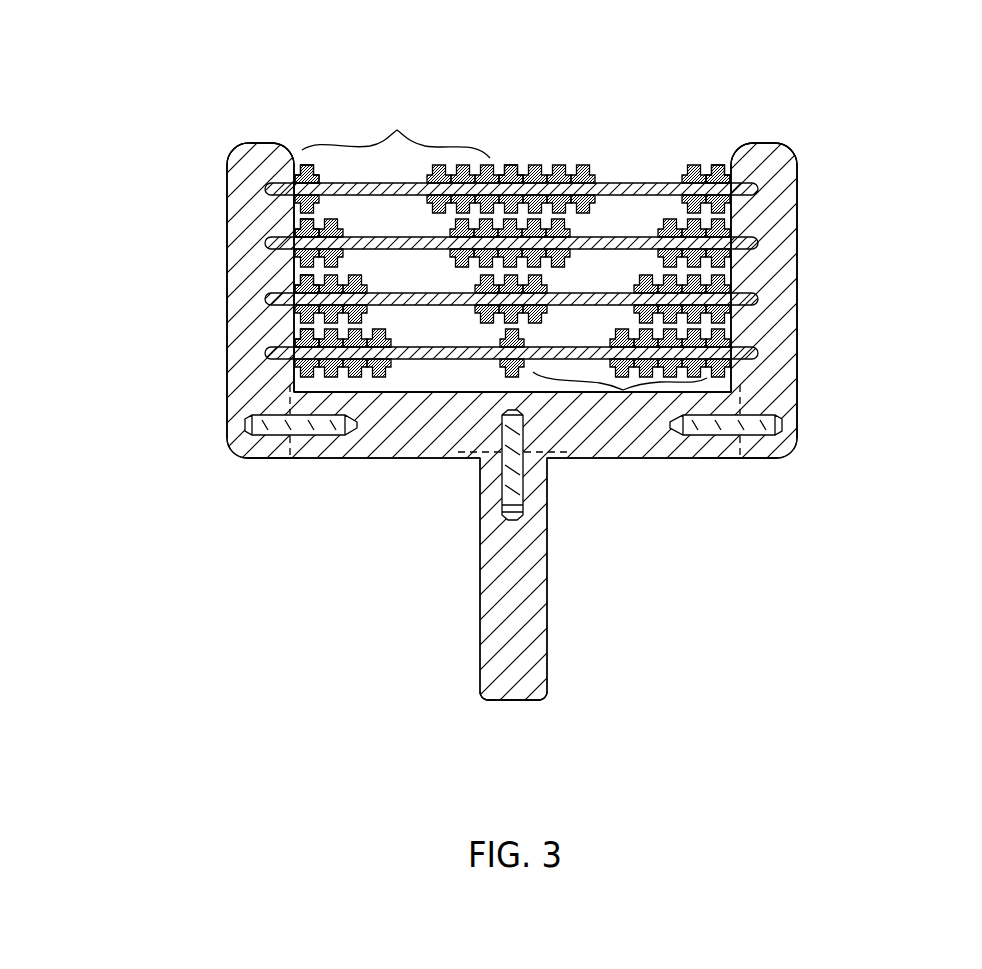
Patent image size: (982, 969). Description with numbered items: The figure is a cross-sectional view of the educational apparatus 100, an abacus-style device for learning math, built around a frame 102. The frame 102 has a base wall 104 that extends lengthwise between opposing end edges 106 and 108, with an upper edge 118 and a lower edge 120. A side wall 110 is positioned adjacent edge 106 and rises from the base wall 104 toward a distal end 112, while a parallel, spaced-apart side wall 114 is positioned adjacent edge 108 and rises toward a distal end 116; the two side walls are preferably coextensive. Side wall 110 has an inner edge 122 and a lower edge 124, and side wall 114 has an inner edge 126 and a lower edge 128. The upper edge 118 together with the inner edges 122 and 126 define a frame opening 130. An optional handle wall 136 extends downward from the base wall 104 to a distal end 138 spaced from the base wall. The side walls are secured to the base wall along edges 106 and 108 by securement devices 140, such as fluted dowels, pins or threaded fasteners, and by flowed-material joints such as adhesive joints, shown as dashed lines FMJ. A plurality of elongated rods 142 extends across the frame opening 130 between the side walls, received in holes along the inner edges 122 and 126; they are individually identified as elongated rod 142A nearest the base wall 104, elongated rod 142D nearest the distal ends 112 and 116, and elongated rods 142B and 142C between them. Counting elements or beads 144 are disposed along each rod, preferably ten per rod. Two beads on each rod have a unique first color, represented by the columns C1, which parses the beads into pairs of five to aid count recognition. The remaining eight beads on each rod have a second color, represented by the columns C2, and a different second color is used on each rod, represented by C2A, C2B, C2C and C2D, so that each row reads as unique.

The apparatus 100 is at (511, 403).
The frame 102 is at (805, 455).
The base wall 104 is at (383, 458).
The end edge 106 is at (300, 450).
The end edge 108 is at (728, 447).
The side wall 110 is at (237, 327).
The distal end 112 is at (258, 142).
The side wall 114 is at (787, 320).
The distal end 116 is at (765, 143).
The upper edge 118 is at (600, 395).
The lower edge 120 is at (627, 460).
The inner edge 122 is at (290, 378).
The lower edge 124 is at (227, 263).
The inner edge 126 is at (745, 382).
The lower edge 128 is at (797, 205).
The frame opening 130 is at (425, 390).
The handle wall 136 is at (480, 610).
The distal end 138 is at (505, 702).
The securement device 140 is at (273, 437).
The elongated rods 142 is at (595, 214).
The elongated rod 142A is at (745, 352).
The elongated rod 142B is at (745, 296).
The elongated rod 142C is at (745, 242).
The elongated rod 142D is at (745, 186).
The counting elements 144 is at (558, 158).
The columns of first color beads C1 is at (510, 158).
The columns of second color beads C2 is at (397, 130).
The second color beads C2A is at (288, 335).
The second color beads C2B is at (288, 280).
The second color beads C2C is at (288, 225).
The second color beads C2D is at (288, 172).
The flowed-material joints FMJ is at (290, 398).